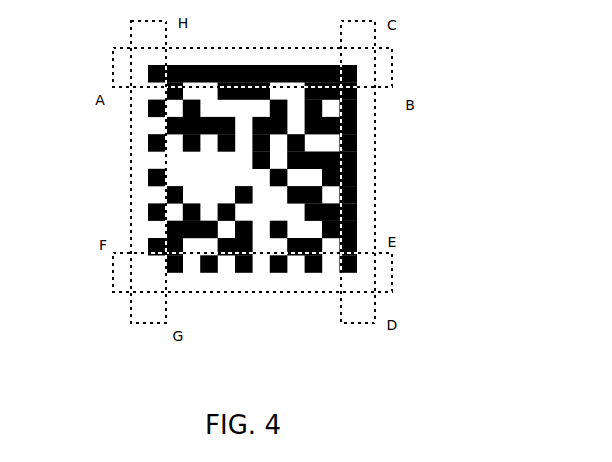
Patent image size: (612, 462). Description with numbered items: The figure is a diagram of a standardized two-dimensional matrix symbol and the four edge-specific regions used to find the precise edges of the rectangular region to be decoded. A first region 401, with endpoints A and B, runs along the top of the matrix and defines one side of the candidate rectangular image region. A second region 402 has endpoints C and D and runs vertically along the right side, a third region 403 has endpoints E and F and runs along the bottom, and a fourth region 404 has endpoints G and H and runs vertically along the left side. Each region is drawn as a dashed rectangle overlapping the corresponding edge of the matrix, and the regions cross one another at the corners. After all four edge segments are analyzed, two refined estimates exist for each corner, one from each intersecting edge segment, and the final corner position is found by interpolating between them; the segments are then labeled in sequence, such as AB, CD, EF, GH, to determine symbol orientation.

The first region 401 is at (392, 67).
The second region 402 is at (357, 323).
The third region 403 is at (392, 270).
The fourth region 404 is at (149, 323).